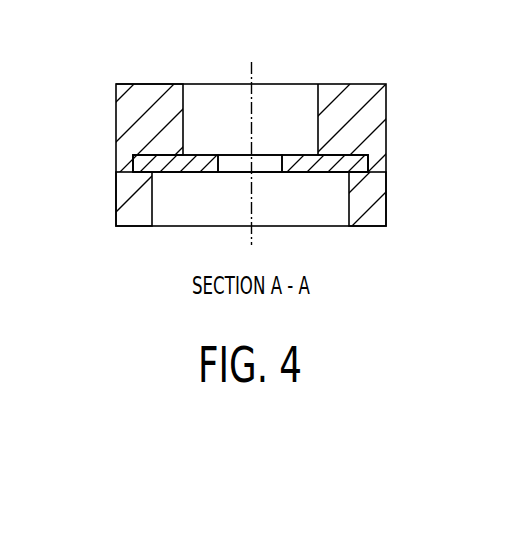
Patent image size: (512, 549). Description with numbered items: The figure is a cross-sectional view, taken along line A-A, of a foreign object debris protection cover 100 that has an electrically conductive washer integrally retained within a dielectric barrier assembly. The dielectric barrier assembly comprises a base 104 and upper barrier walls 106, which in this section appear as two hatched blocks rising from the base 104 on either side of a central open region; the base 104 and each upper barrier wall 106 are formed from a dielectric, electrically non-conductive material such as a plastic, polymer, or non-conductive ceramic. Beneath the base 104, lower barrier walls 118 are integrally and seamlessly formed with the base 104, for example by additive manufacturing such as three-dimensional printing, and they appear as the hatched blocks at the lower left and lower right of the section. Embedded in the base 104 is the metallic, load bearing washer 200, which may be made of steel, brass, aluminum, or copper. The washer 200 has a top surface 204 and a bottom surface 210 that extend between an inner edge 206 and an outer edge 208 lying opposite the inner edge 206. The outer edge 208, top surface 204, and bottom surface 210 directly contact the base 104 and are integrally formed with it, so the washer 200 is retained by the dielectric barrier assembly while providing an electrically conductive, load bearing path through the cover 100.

The foreign object debris protection cover 100 is at (146, 75).
The base 104 is at (139, 159).
The upper barrier wall 106 is at (116, 104).
The lower barrier wall 118 is at (116, 212).
The washer 200 is at (200, 174).
The top surface 204 is at (197, 154).
The inner edge 206 is at (289, 161).
The outer edge 208 is at (128, 172).
The bottom surface 210 is at (307, 173).